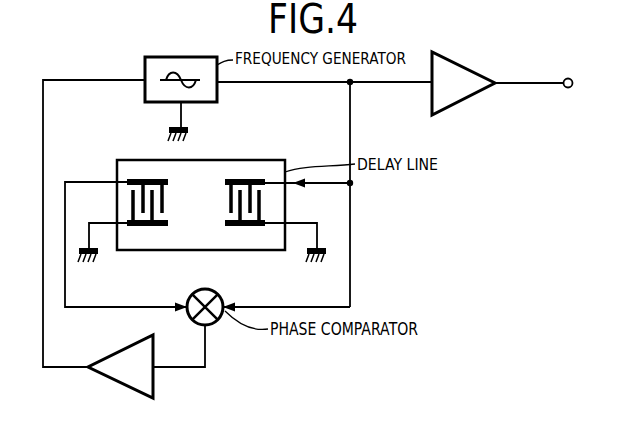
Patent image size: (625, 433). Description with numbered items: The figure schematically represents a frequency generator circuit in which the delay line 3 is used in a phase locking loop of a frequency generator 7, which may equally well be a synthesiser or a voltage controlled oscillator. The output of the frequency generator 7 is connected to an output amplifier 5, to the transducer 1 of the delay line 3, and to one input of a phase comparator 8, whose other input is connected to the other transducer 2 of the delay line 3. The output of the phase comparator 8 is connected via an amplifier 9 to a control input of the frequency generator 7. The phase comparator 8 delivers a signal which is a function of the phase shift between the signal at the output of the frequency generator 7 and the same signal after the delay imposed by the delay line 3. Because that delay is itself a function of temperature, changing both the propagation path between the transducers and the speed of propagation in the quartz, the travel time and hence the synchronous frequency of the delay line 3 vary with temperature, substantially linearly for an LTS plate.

The transducer 1 is at (219, 204).
The other transducer 2 is at (172, 202).
The delay line 3 is at (247, 159).
The output amplifier 5 is at (457, 88).
The frequency generator 7 is at (160, 67).
The phase comparator 8 is at (224, 314).
The amplifier 9 is at (127, 363).